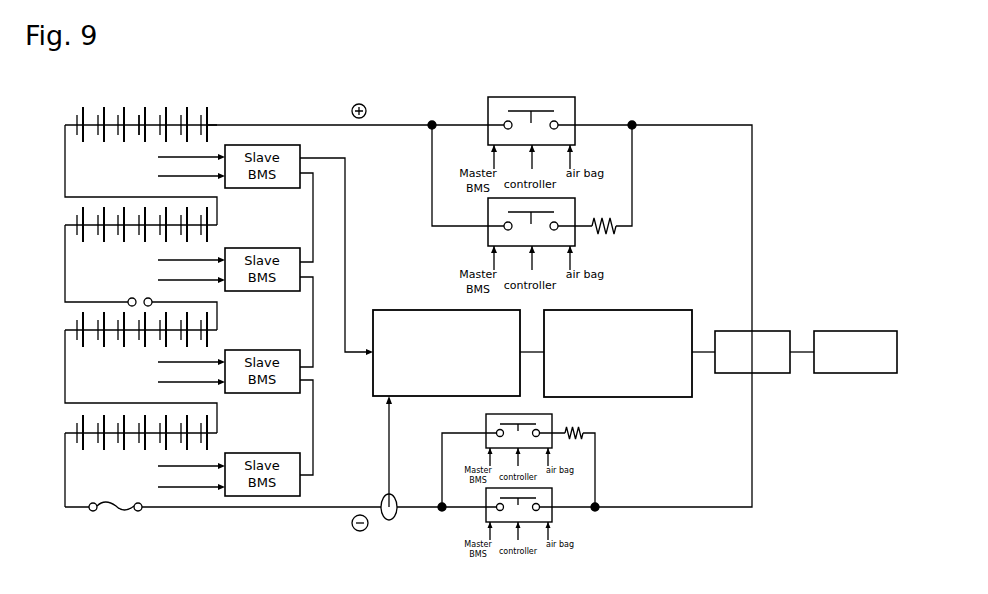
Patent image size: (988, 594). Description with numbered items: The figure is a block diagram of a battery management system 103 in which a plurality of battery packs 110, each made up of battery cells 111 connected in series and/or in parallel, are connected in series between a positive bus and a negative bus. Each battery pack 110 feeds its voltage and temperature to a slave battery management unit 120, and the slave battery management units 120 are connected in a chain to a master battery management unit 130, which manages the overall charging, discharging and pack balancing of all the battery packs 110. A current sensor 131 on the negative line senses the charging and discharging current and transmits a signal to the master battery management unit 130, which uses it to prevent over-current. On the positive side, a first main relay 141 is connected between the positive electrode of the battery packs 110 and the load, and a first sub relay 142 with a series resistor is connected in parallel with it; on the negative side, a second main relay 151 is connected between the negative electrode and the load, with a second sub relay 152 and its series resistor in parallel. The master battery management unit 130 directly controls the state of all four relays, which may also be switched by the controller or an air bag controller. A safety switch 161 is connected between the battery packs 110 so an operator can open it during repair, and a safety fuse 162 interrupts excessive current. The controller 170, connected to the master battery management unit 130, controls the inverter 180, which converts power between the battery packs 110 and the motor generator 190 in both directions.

The battery management system 103 is at (801, 96).
The battery packs 110 is at (209, 102).
The battery cells 111 is at (143, 106).
The slave battery management units 120 is at (261, 188).
The master battery management unit 130 is at (426, 310).
The current sensor 131 is at (392, 496).
The first main relay 141 is at (488, 102).
The first sub relay 142 is at (488, 243).
The second main relay 151 is at (486, 518).
The second sub relay 152 is at (486, 419).
The safety switch 161 is at (133, 297).
The safety fuse 162 is at (126, 512).
The controller 170 is at (639, 310).
The inverter 180 is at (775, 331).
The motor generator 190 is at (855, 331).